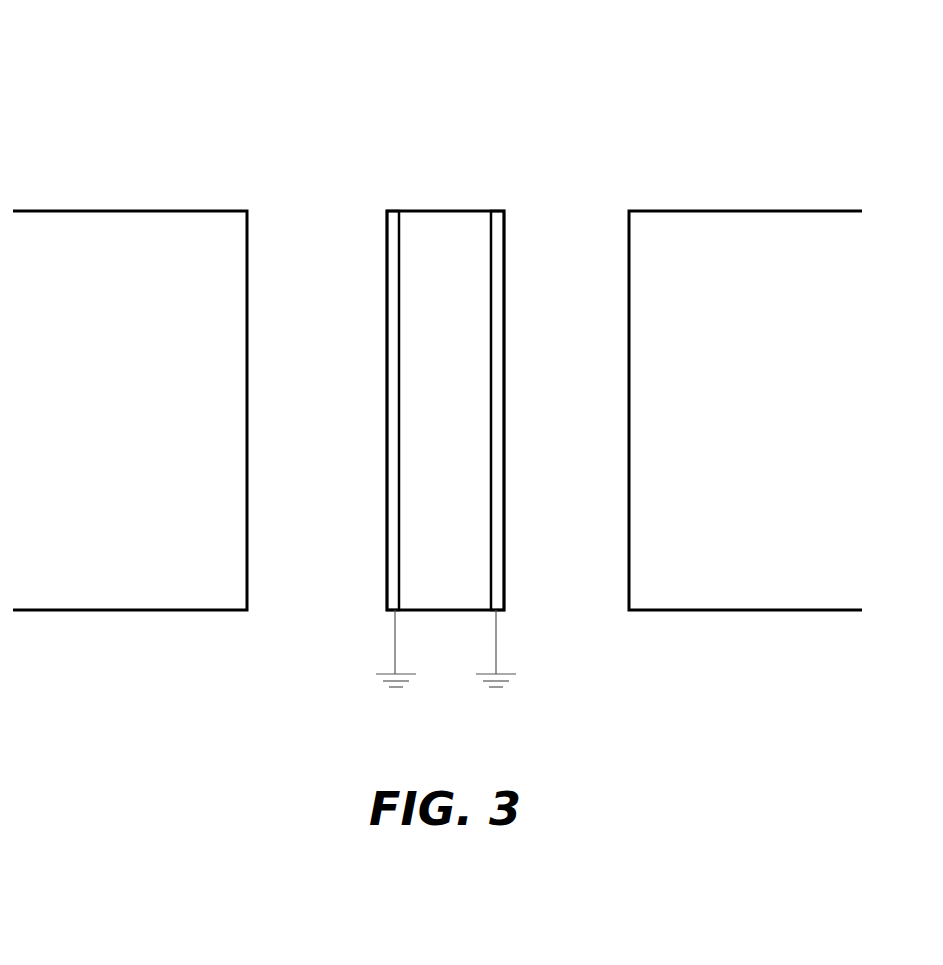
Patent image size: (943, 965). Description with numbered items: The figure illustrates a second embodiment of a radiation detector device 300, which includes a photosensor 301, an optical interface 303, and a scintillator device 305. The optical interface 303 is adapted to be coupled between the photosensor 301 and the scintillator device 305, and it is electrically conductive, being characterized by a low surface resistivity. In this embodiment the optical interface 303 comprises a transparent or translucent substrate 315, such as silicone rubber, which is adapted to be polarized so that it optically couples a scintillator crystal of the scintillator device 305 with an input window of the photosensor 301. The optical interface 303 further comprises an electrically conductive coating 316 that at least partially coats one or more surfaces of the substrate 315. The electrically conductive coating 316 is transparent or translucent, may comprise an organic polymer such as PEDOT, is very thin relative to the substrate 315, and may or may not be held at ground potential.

The radiation detector device 300 is at (90, 96).
The photosensor 301 is at (152, 422).
The optical interface 303 is at (446, 403).
The scintillator device 305 is at (774, 428).
The substrate 315 is at (427, 428).
The electrically conductive coating 316 is at (393, 363).